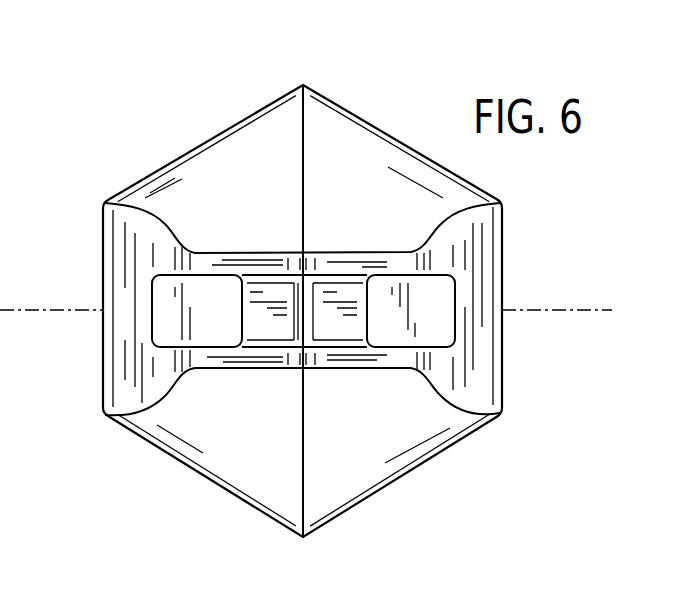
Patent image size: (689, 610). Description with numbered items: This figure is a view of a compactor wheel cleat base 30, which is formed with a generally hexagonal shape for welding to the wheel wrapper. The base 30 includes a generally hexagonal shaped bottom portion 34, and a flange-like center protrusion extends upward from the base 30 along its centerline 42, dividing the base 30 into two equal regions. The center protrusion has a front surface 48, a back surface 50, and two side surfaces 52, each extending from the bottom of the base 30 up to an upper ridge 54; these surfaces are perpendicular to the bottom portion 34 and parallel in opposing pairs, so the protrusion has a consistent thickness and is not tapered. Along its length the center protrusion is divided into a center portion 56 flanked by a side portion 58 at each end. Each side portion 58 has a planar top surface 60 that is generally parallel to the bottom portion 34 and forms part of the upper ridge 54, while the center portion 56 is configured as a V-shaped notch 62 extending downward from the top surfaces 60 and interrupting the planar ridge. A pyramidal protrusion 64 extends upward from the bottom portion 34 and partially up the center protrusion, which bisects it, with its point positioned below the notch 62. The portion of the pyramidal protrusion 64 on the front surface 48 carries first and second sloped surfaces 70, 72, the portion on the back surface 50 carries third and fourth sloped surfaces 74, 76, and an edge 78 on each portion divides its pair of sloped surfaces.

The base 30 is at (580, 47).
The bottom portion 34 is at (407, 478).
The centerline 42 is at (48, 311).
The front surface 48 is at (191, 247).
The back surface 50 is at (333, 380).
The side surfaces 52 is at (455, 323).
The upper ridge 54 is at (266, 349).
The center portion 56 is at (310, 245).
The side portion 58 is at (218, 244).
The top surface 60 is at (229, 309).
The V-shaped notch 62 is at (298, 327).
The pyramidal protrusion 64 is at (187, 132).
The first sloped surface 70 is at (263, 170).
The second sloped surface 72 is at (369, 170).
The third sloped surface 74 is at (263, 469).
The fourth sloped surface 76 is at (369, 469).
The edge 78 is at (303, 168).